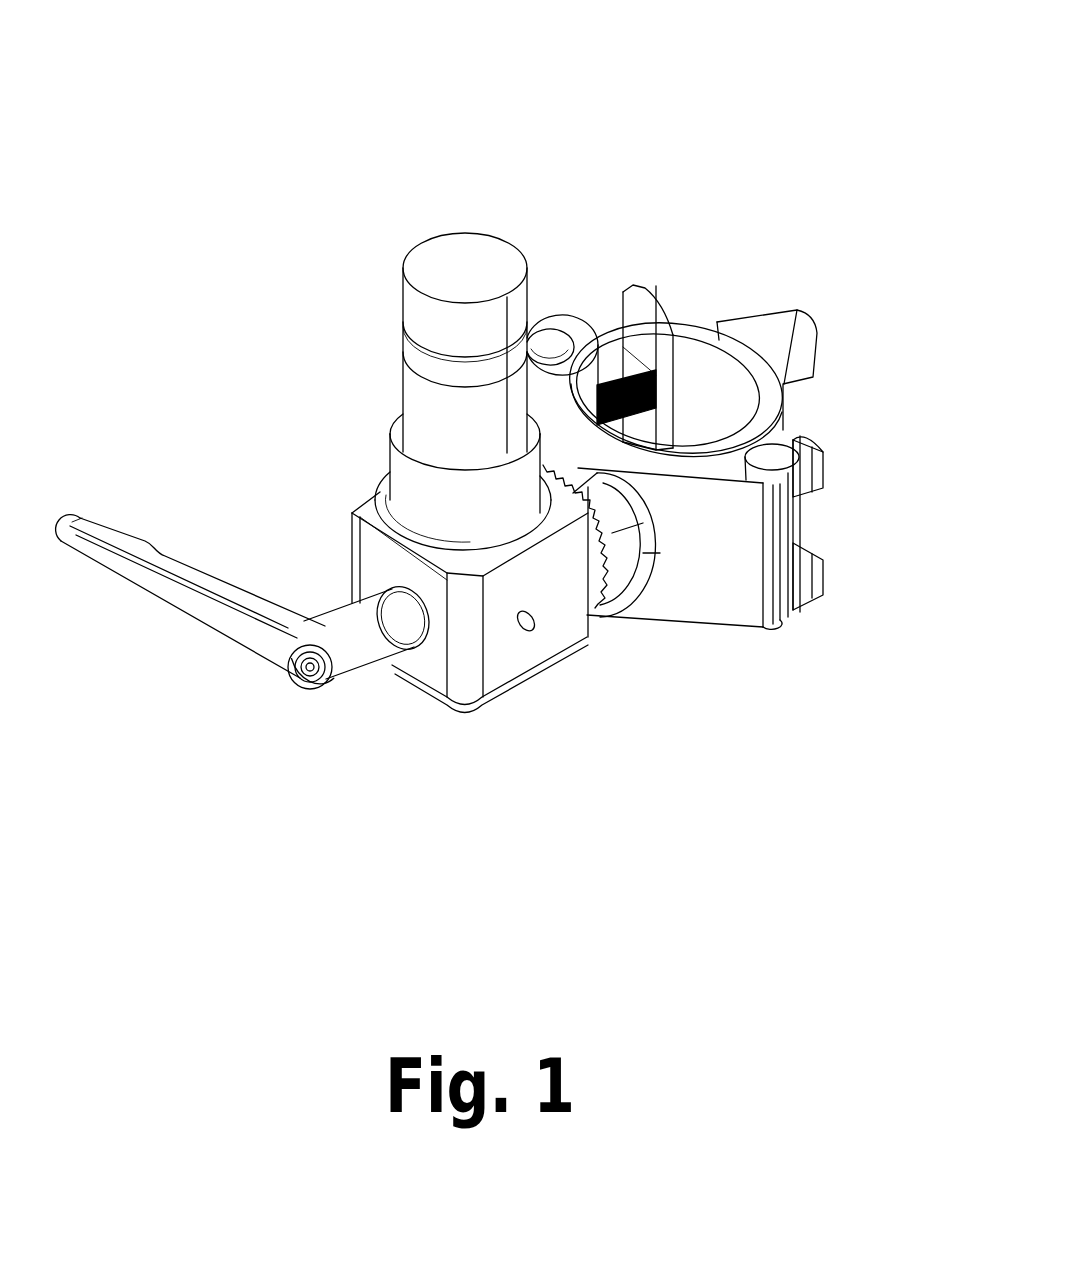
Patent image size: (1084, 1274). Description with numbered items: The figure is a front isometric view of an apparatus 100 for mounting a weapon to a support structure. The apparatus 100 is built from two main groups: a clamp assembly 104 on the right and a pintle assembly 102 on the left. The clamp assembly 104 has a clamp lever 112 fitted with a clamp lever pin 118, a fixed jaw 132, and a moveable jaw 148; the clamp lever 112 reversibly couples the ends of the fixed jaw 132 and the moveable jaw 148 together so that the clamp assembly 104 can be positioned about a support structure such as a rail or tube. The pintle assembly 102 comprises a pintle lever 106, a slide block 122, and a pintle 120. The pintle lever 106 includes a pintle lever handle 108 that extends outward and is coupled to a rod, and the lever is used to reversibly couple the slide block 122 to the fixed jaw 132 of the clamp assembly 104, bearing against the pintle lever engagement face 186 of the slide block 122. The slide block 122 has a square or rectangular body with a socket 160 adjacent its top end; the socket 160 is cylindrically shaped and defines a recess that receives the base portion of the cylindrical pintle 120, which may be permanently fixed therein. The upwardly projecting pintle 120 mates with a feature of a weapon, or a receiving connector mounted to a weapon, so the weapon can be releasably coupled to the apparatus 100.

The apparatus 100 is at (627, 85).
The pintle assembly 102 is at (362, 410).
The clamp assembly 104 is at (615, 222).
The pintle lever 106 is at (333, 690).
The pintle lever handle 108 is at (148, 590).
The clamp lever 112 is at (825, 298).
The clamp lever pin 118 is at (543, 343).
The pintle 120 is at (427, 257).
The slide block 122 is at (466, 670).
The fixed jaw 132 is at (683, 563).
The moveable jaw 148 is at (673, 333).
The socket 160 is at (400, 466).
The pintle lever engagement face 186 is at (368, 543).